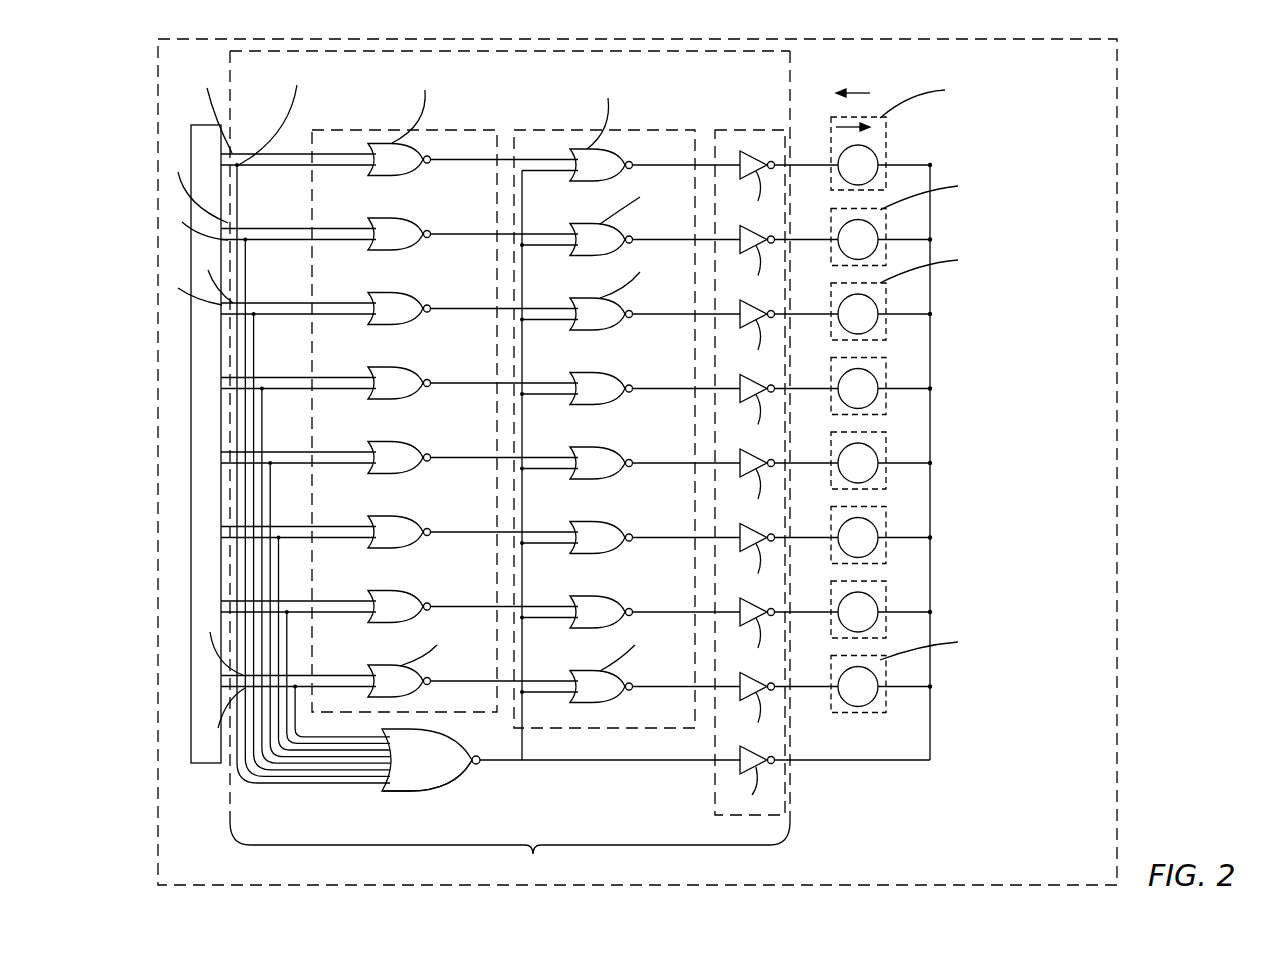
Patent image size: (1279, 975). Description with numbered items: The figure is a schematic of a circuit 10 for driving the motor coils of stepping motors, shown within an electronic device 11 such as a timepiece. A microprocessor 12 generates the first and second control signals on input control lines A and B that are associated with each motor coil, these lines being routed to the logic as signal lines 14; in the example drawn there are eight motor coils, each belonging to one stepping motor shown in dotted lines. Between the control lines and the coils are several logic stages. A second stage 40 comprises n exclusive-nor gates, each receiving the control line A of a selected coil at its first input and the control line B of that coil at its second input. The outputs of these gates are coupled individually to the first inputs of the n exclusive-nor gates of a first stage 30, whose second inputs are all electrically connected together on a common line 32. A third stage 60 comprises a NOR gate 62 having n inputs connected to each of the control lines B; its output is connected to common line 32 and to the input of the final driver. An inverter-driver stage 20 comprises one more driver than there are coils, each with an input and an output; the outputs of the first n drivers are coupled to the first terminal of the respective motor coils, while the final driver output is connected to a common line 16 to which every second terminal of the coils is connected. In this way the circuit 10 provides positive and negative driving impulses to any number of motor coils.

The circuit 10 is at (510, 467).
The electronic device 11 is at (1117, 84).
The microprocessor 12 is at (203, 343).
The signal lines 14 is at (267, 121).
The common line 16 is at (930, 493).
The inverter-driver stage 20 is at (745, 128).
The first stage 30 is at (597, 728).
The common line 32 is at (522, 752).
The second stage 40 is at (450, 712).
The third stage 60 is at (446, 795).
The NOR gate 62 is at (405, 792).